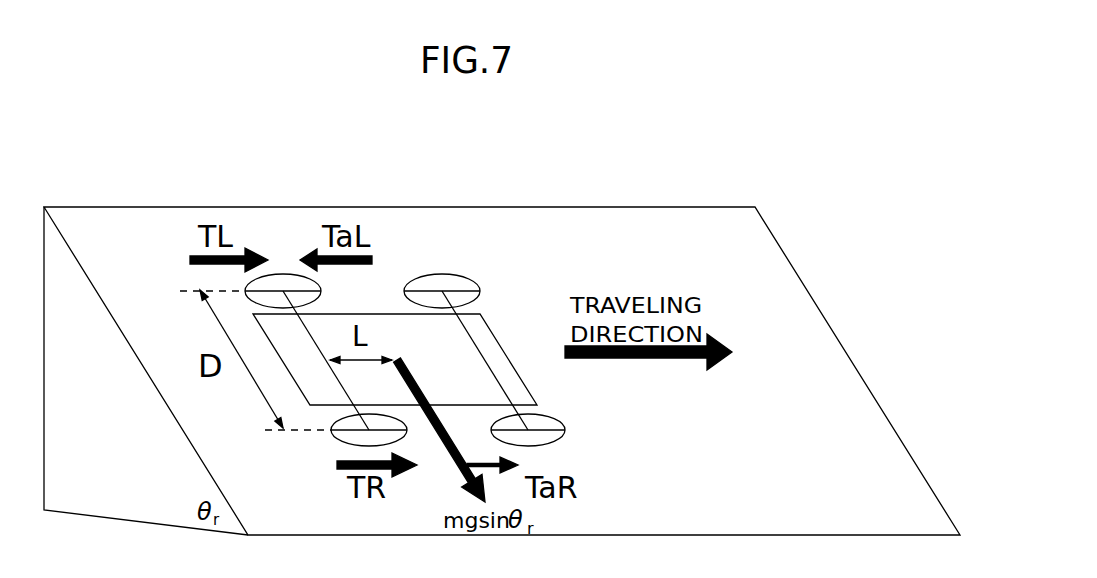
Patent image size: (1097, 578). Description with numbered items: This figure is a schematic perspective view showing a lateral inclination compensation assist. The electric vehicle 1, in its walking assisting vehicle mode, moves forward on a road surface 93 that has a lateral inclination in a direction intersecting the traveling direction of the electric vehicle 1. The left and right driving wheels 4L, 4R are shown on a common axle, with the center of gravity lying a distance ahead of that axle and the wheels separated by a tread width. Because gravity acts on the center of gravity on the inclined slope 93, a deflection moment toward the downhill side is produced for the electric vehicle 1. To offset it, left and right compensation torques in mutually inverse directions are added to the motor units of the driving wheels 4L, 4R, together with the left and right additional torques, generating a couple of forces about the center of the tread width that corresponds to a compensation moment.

The electric vehicle 1 is at (498, 343).
The left driving wheel 4L is at (245, 287).
The right driving wheel 4R is at (333, 437).
The road surface 93 is at (773, 277).